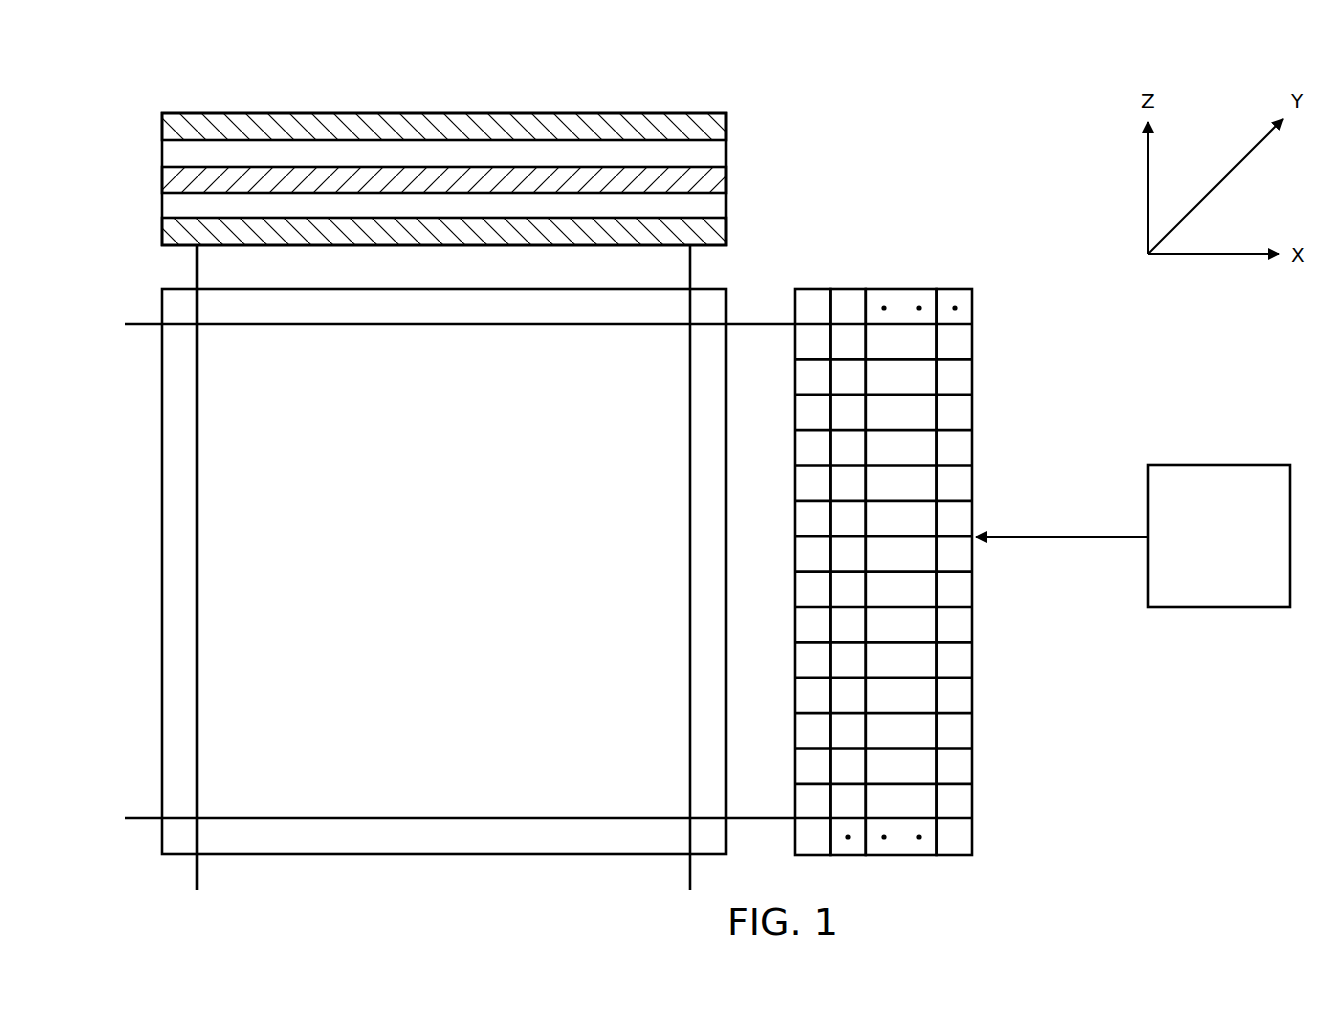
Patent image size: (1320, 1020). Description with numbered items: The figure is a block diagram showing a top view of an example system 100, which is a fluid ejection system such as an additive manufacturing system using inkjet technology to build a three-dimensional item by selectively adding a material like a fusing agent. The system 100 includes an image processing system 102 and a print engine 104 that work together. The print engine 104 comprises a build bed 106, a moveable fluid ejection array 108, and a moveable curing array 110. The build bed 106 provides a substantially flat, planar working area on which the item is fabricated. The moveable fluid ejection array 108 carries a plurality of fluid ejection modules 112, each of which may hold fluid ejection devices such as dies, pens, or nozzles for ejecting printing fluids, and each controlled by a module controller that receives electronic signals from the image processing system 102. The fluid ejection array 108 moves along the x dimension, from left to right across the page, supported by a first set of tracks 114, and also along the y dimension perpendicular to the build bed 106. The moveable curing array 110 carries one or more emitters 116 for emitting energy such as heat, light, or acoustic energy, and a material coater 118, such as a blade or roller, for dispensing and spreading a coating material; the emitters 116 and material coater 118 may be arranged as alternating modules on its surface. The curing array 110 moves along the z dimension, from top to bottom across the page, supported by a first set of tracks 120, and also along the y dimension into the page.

The system 100 is at (153, 43).
The image processing system 102 is at (1238, 549).
The print engine 104 is at (972, 96).
The build bed 106 is at (462, 582).
The moveable fluid ejection array 108 is at (975, 289).
The moveable curing array 110 is at (726, 113).
The fluid ejection modules 112 is at (877, 566).
The first set of tracks 114 is at (538, 547).
The emitters 116 is at (415, 173).
The material coater 118 is at (162, 177).
The first set of tracks 120 is at (443, 573).